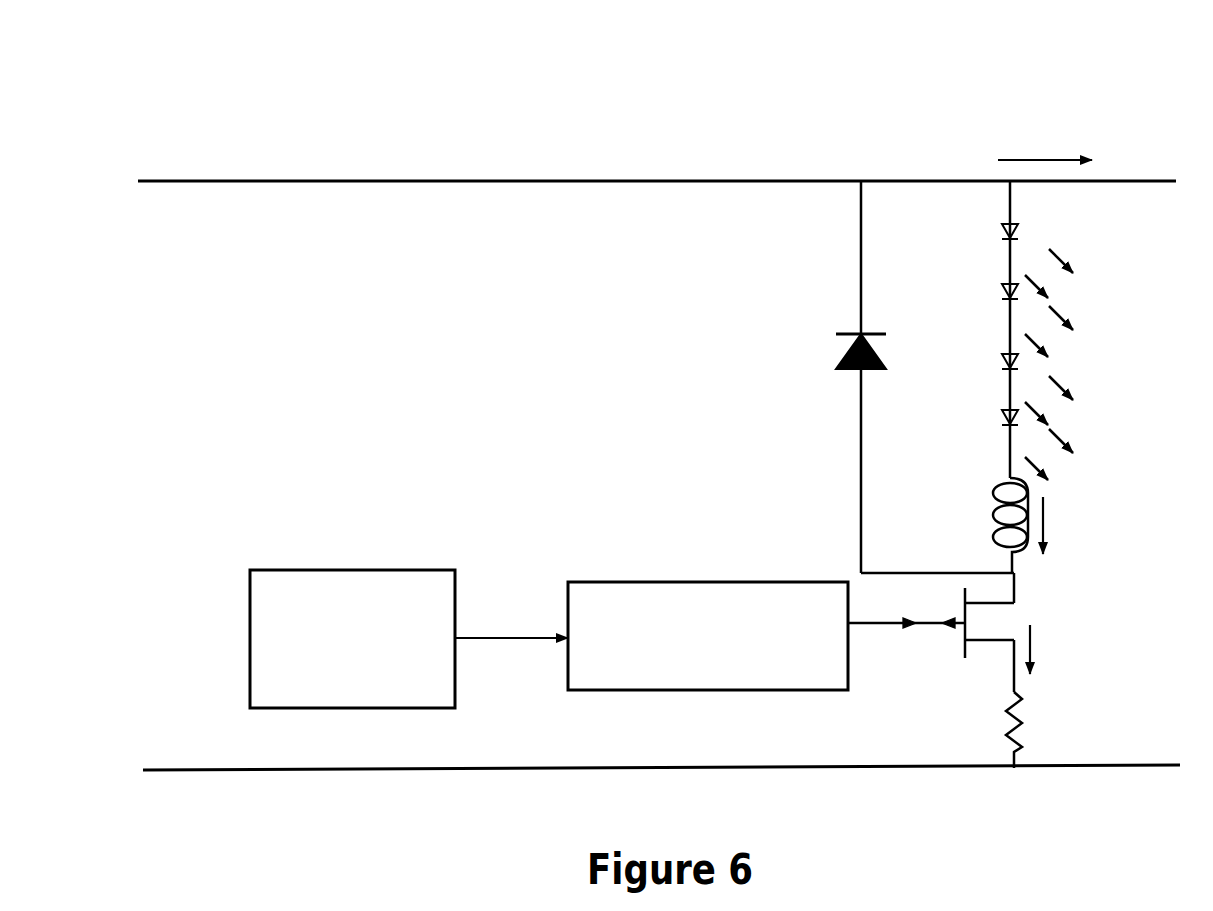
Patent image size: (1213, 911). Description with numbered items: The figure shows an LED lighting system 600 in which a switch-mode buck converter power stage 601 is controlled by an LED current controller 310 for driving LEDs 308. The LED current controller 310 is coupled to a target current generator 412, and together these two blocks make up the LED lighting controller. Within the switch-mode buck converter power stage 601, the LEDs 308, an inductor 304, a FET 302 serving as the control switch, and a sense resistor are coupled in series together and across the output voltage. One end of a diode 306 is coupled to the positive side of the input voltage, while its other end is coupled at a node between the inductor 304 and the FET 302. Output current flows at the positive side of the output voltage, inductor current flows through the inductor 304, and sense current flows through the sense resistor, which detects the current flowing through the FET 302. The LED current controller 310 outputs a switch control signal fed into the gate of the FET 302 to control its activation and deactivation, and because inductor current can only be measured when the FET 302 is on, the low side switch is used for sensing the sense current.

The LED lighting system 600 is at (955, 105).
The switch-mode buck converter power stage 601 is at (810, 181).
The diode 306 is at (842, 356).
The LEDs 308 is at (988, 322).
The inductor 304 is at (996, 527).
The FET 302 is at (1003, 644).
The LED current controller 310 is at (708, 636).
The target current generator 412 is at (352, 639).